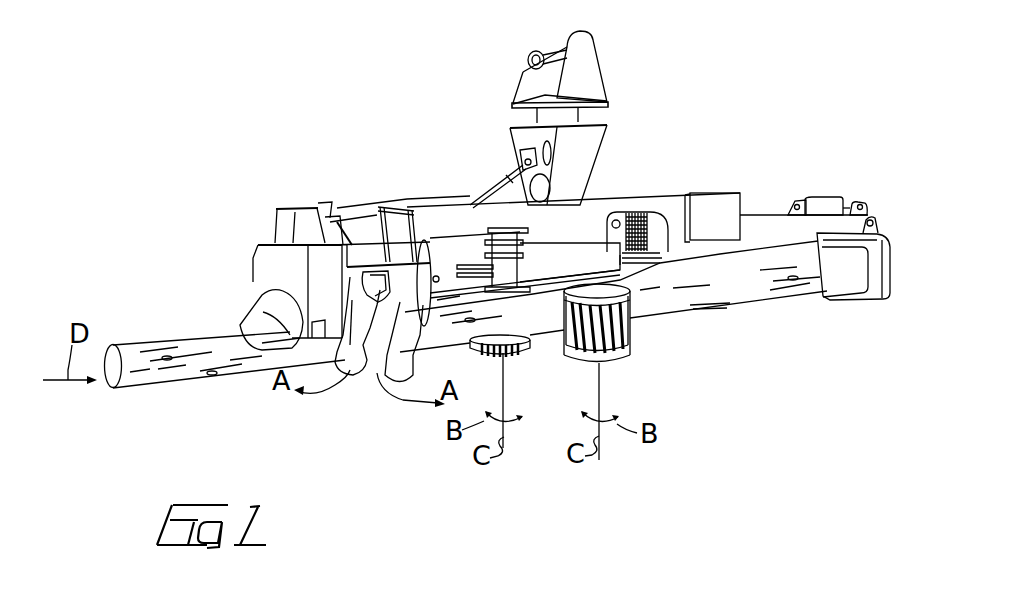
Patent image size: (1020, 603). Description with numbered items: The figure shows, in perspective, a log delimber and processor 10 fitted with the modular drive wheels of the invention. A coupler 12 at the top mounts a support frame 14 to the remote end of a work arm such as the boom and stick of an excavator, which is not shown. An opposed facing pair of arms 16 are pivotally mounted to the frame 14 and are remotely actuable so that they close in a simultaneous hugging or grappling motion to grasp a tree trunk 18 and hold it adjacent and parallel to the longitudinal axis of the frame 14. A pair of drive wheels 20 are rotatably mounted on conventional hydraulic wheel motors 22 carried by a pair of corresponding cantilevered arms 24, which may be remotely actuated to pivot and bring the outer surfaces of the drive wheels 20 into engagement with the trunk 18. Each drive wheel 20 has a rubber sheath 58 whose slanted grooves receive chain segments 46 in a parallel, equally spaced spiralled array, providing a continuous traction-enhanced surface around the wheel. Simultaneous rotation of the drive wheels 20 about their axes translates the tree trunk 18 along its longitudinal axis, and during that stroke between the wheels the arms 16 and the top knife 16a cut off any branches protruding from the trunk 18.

The log processor 10 is at (464, 80).
The coupler 12 is at (586, 66).
The support frame 14 is at (665, 193).
The arms 16 is at (388, 380).
The top knife 16a is at (253, 322).
The tree trunk 18 is at (178, 343).
The drive wheels 20 is at (507, 360).
The hydraulic wheel motors 22 is at (645, 279).
The cantilevered arms 24 is at (582, 235).
The chain segments 46 is at (628, 345).
The rubber sheath 58 is at (630, 330).